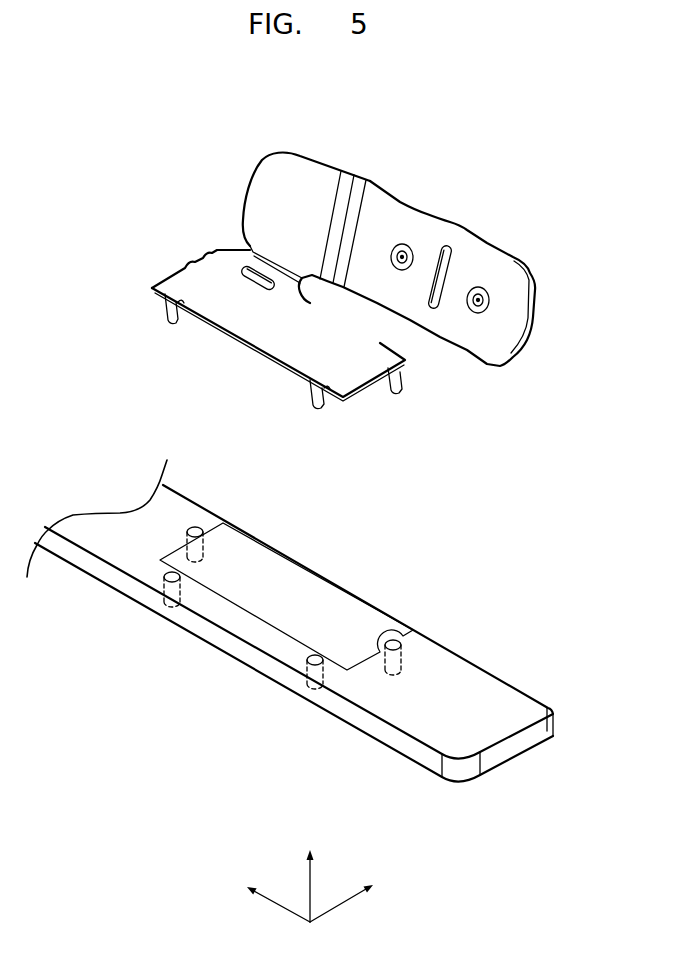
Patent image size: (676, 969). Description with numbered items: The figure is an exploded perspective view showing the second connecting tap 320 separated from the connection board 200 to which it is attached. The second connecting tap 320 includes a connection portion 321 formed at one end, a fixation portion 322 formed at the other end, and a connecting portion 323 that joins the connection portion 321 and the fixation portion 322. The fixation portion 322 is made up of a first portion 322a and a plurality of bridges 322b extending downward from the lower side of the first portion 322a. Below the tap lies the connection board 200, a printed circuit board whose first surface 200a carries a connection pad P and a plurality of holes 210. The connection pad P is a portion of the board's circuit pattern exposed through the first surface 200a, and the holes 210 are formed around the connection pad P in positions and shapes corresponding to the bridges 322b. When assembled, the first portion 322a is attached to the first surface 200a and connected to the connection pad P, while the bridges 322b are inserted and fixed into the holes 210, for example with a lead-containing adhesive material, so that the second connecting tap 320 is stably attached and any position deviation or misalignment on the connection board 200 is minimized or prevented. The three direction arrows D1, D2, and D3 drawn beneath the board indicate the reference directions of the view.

The second connecting tap 320 is at (423, 248).
The connection portion 321 is at (520, 320).
The fixation portion 322 is at (255, 343).
The first portion 322a is at (277, 337).
The bridges 322b is at (206, 424).
The connecting portion 323 is at (279, 258).
The connection board 200 is at (307, 641).
The first surface 200a is at (481, 687).
The holes 210 is at (398, 641).
The connection pad P is at (307, 590).
The first direction D1 is at (266, 893).
The second direction D2 is at (349, 893).
The third direction D3 is at (310, 874).